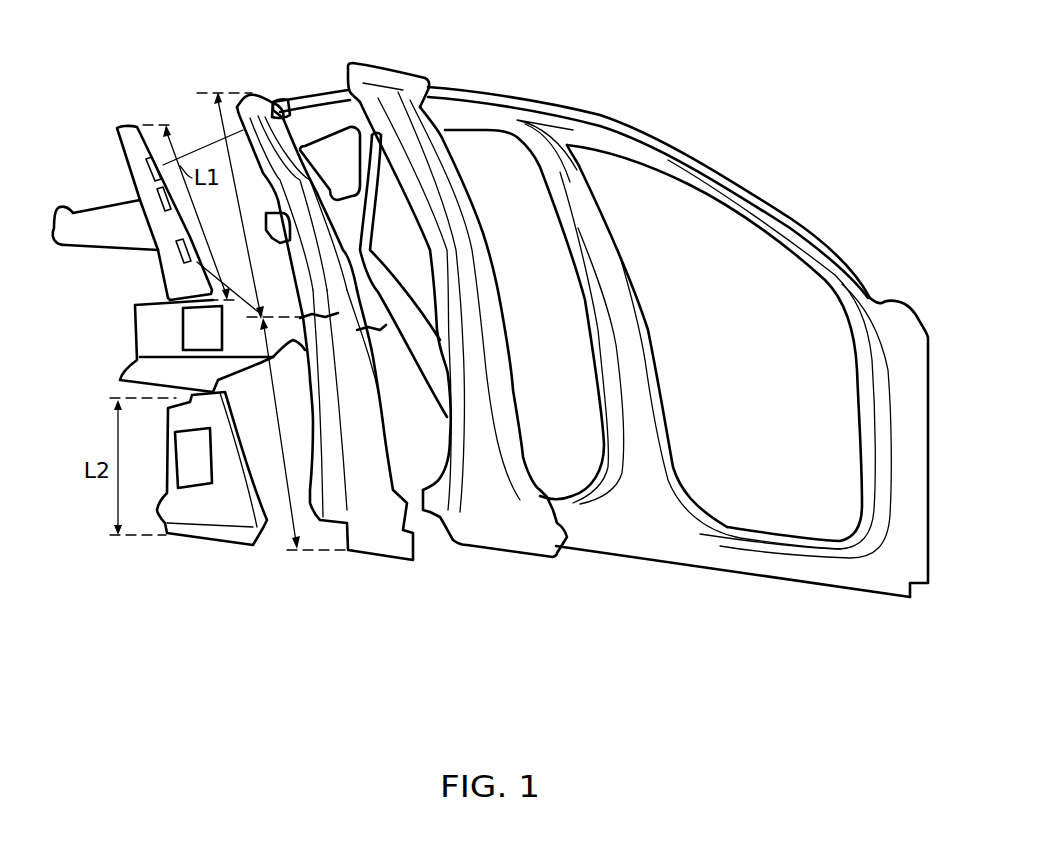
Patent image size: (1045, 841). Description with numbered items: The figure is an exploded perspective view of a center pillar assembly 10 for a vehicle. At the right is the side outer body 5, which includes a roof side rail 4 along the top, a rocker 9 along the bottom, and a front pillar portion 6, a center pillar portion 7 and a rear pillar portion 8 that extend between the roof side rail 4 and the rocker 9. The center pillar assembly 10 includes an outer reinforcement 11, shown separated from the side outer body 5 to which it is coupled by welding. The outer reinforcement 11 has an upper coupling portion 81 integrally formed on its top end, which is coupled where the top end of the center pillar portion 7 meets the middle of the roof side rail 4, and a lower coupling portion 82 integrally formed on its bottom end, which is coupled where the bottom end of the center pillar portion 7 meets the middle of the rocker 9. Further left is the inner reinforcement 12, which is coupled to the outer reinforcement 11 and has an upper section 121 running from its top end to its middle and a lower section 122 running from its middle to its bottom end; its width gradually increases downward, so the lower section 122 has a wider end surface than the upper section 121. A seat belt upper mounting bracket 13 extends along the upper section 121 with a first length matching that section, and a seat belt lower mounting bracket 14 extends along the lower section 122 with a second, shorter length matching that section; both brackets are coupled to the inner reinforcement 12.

The roof side rail 4 is at (519, 98).
The side outer body 5 is at (626, 102).
The front pillar portion 6 is at (820, 244).
The center pillar portion 7 is at (650, 328).
The rear pillar portion 8 is at (290, 116).
The rocker 9 is at (648, 547).
The center pillar assembly 10 is at (268, 572).
The outer reinforcement 11 is at (484, 222).
The inner reinforcement 12 is at (313, 160).
The seat belt upper mounting bracket 13 is at (118, 177).
The seat belt lower mounting bracket 14 is at (150, 445).
The upper coupling portion 81 is at (390, 63).
The lower coupling portion 82 is at (505, 546).
The upper section 121 is at (233, 190).
The lower section 122 is at (294, 434).